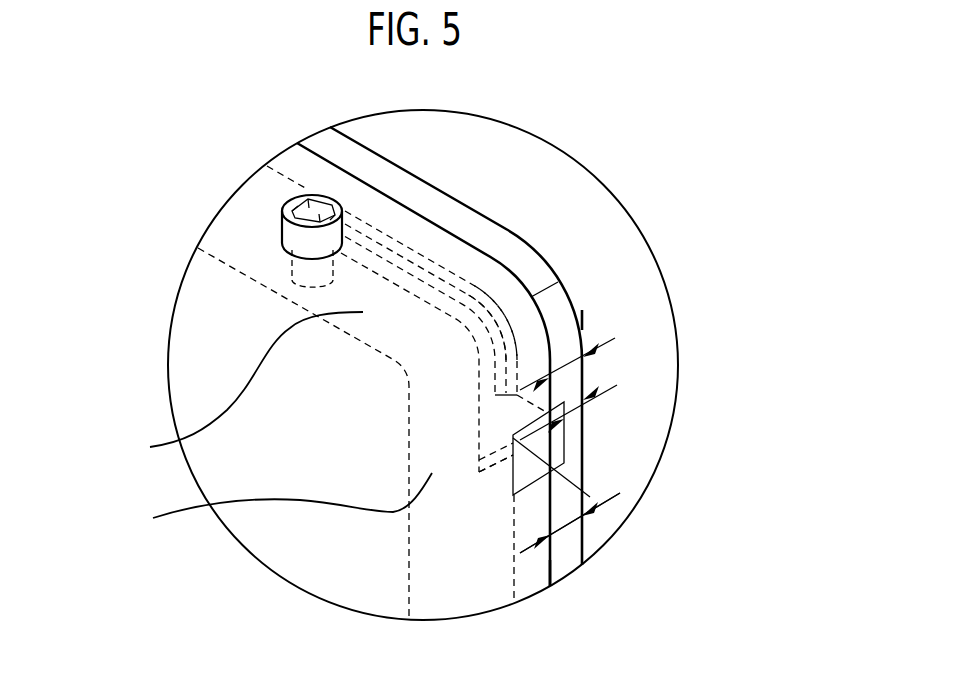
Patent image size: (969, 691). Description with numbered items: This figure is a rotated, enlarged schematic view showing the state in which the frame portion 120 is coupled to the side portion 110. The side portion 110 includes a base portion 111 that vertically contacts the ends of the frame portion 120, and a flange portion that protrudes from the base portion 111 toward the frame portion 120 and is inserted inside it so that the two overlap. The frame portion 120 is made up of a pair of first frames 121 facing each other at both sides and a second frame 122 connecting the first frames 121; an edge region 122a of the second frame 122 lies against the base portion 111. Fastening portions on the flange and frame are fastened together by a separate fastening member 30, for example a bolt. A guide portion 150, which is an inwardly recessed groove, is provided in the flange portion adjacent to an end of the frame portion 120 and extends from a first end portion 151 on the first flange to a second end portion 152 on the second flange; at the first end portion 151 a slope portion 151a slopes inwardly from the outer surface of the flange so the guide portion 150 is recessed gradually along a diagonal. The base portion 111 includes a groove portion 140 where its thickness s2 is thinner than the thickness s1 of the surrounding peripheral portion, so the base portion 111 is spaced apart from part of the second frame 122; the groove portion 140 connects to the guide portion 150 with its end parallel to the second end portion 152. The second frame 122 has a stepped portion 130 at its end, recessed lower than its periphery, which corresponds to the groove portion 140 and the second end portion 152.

The fastening member 30 is at (313, 186).
The side portion 110 is at (548, 228).
The base portion 111 is at (565, 322).
The frame portion 120 is at (116, 437).
The first frame 121 is at (242, 389).
The second frame 122 is at (277, 506).
The panel edge portion 122a is at (552, 548).
The stepped portion 130 is at (598, 506).
The groove portion 140 is at (560, 437).
The guide portion 150 is at (447, 270).
The first end portion 151 is at (375, 252).
The slope portion 151a is at (441, 280).
The second end portion 152 is at (493, 470).
The thickness of the peripheral portion of the base portion s1 is at (565, 370).
The thickness of the base portion at the groove portion s2 is at (570, 415).